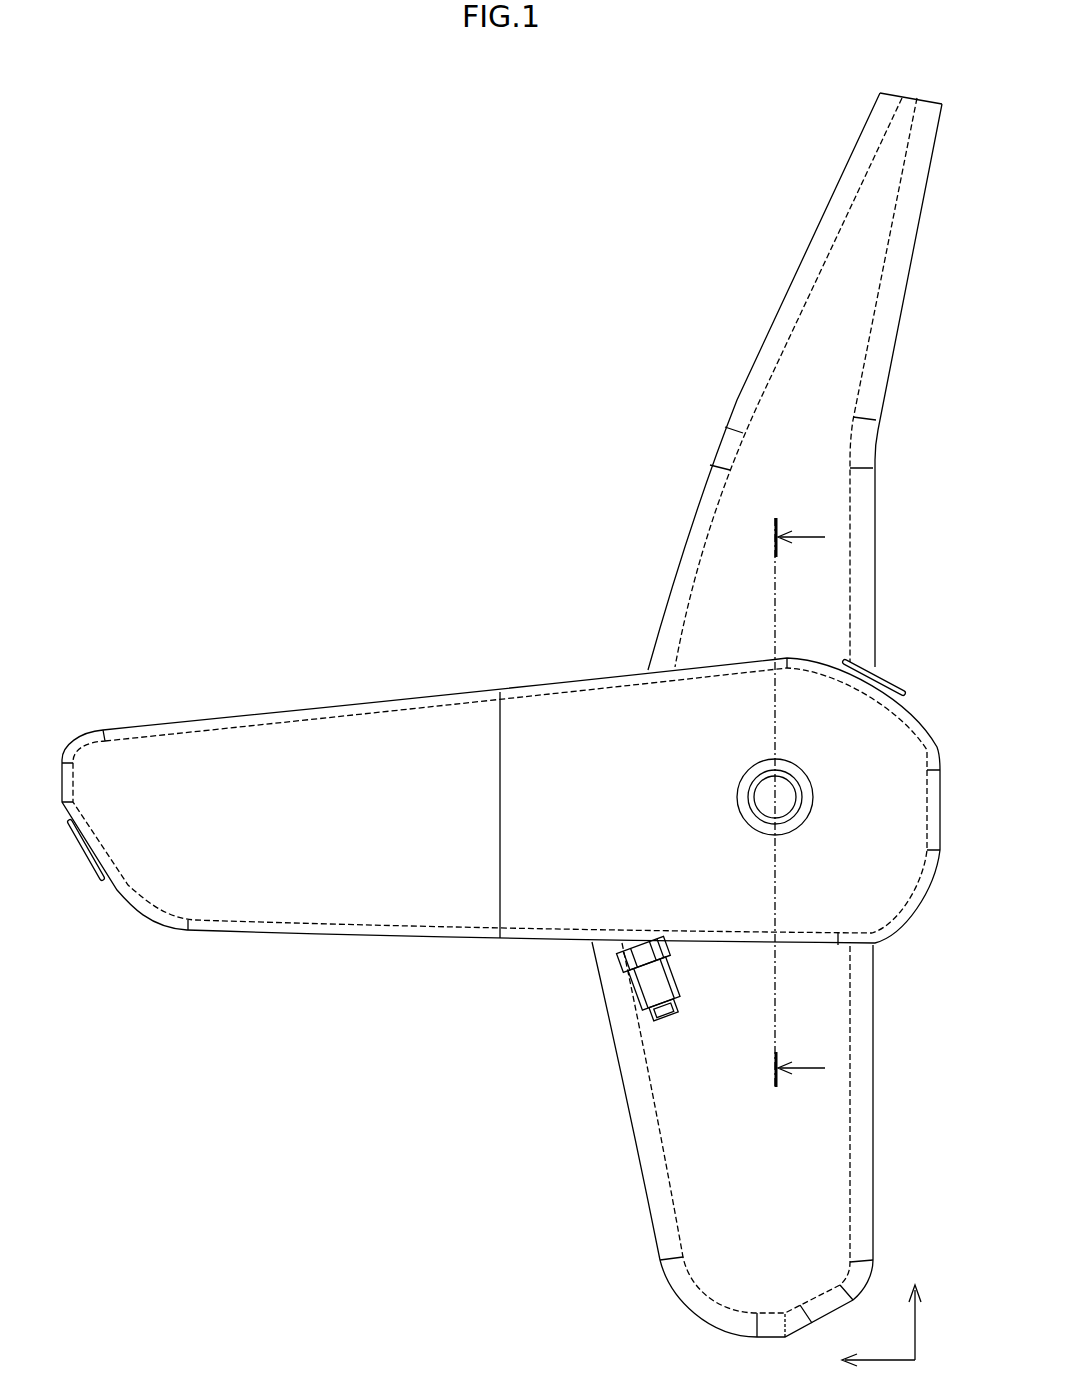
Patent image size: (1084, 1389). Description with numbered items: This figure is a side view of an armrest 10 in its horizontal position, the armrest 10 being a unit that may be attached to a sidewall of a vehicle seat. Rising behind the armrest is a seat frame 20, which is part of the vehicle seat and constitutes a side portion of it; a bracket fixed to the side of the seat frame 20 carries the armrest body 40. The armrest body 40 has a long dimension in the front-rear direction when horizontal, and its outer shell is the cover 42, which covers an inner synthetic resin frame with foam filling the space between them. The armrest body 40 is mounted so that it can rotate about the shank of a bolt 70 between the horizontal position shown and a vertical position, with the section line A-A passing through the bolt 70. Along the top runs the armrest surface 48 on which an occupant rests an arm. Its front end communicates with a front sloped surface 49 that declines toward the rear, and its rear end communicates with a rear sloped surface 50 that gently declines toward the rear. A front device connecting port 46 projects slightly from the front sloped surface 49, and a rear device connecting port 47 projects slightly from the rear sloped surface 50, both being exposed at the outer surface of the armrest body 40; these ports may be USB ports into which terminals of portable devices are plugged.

The armrest 10 is at (479, 478).
The seat frame 20 is at (765, 279).
The armrest body 40 is at (454, 662).
The cover 42 is at (302, 753).
The front device connecting port 46 is at (87, 855).
The rear device connecting port 47 is at (883, 677).
The armrest surface 48 is at (377, 700).
The front sloped surface 49 is at (110, 888).
The rear sloped surface 50 is at (910, 702).
The bolt 70 is at (763, 792).